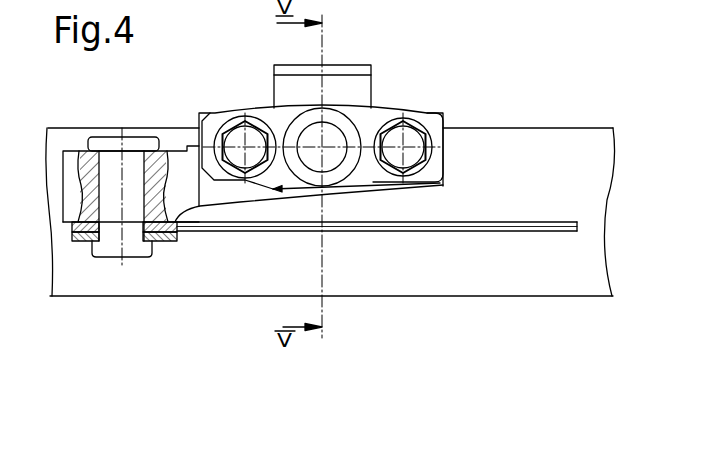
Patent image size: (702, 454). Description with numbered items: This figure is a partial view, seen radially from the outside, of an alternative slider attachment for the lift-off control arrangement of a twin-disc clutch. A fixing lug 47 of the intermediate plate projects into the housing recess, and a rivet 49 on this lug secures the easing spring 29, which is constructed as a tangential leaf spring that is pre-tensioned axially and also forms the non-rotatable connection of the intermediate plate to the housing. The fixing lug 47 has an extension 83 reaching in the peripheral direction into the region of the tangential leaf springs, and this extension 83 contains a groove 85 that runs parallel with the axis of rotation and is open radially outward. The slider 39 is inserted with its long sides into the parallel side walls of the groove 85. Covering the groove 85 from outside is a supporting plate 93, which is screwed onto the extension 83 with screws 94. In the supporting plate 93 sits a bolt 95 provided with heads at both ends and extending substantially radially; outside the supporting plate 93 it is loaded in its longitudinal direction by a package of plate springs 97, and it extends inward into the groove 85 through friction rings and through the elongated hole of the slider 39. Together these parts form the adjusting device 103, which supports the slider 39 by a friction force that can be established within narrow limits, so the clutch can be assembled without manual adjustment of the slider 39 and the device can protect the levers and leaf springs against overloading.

The easing spring 29 is at (500, 232).
The slider 39 is at (286, 78).
The fixing lug 47 is at (86, 195).
The rivet 49 is at (97, 137).
The extension 83 is at (246, 203).
The groove 85 is at (277, 195).
The supporting plate 93 is at (264, 113).
The screws 94 is at (232, 122).
The bolt 95 is at (332, 160).
The package of plate springs 97 is at (347, 167).
The adjusting device 103 is at (393, 100).